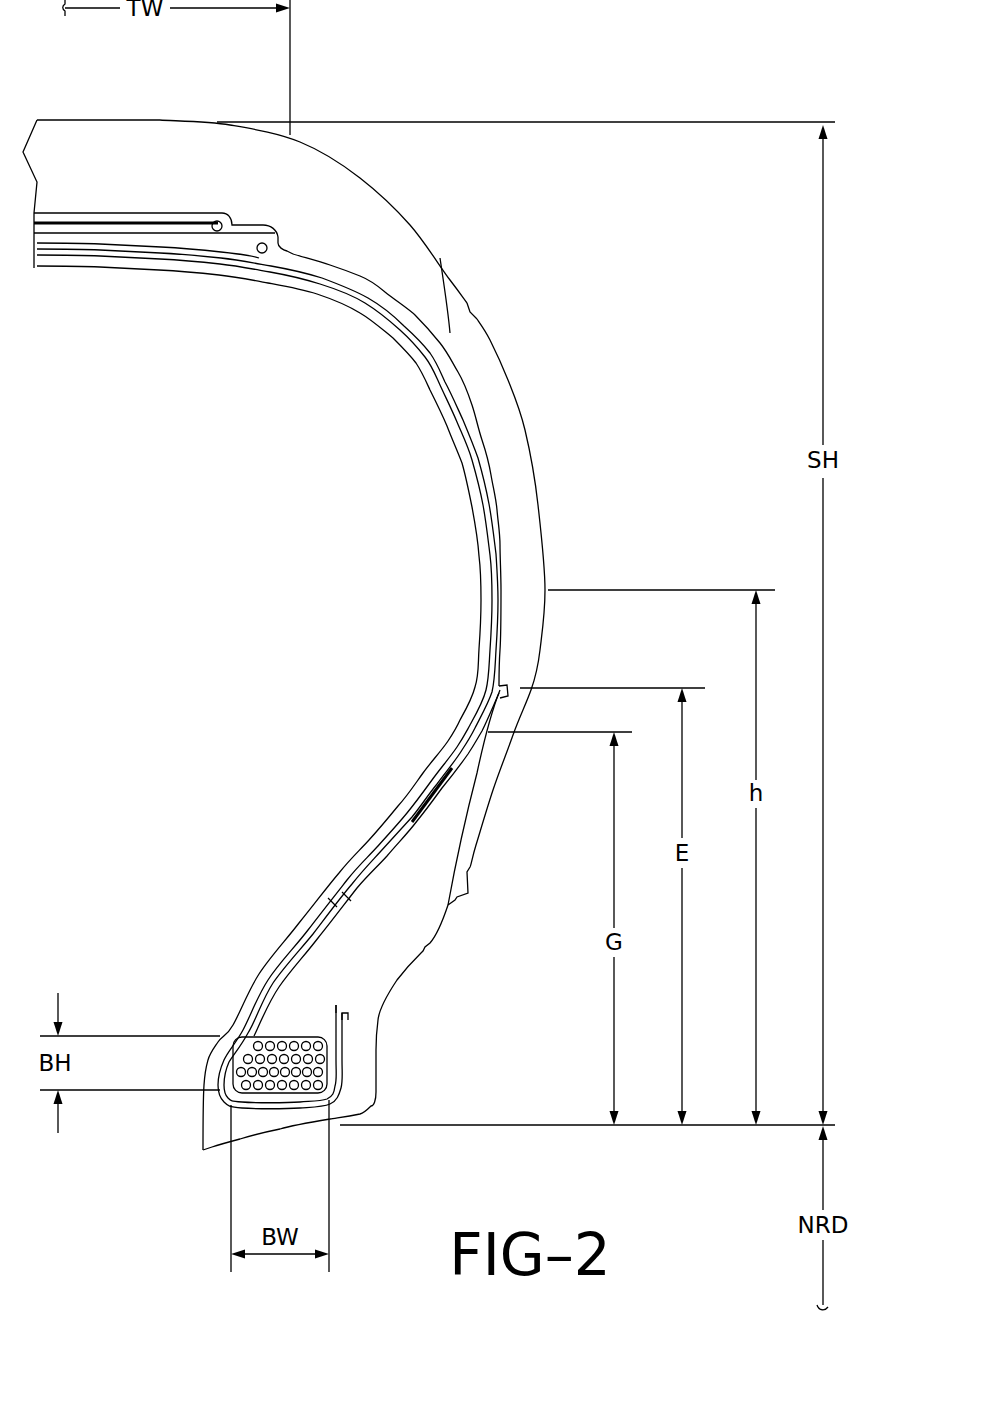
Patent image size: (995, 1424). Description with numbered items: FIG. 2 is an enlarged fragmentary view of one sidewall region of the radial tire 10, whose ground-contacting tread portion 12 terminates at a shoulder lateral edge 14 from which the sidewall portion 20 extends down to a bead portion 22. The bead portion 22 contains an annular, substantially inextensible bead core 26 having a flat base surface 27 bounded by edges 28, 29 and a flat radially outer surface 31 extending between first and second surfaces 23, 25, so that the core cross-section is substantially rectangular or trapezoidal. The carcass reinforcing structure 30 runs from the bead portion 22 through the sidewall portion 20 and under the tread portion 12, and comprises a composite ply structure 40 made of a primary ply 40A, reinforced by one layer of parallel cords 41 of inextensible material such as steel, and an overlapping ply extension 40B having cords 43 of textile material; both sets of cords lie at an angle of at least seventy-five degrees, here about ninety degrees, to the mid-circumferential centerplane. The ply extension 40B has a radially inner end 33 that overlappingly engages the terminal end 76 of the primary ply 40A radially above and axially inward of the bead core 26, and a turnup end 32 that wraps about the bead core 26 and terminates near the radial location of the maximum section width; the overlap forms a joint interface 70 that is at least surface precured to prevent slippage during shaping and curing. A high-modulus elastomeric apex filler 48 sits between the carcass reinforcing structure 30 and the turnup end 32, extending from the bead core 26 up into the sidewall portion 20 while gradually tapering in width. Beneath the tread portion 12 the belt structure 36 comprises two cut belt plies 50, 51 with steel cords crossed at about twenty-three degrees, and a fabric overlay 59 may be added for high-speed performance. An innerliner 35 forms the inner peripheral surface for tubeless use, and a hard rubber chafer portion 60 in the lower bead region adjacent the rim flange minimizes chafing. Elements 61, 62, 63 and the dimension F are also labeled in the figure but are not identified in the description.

The tire 10 is at (515, 260).
The tread portion 12 is at (57, 120).
The lateral edge 14 is at (296, 143).
The sidewall portion 20 is at (540, 507).
The bead portion 22 is at (299, 989).
The first surface 23 is at (228, 1085).
The second surface 25 is at (335, 1056).
The bead core 26 is at (263, 1047).
The flat base surface 27 is at (293, 1094).
The edge 28 is at (203, 1150).
The edge 29 is at (323, 1086).
The carcass reinforcing structure 30 is at (57, 281).
The flat radially outer surface 31 is at (288, 1035).
The turnup end 32 is at (458, 830).
The radially inner end 33 is at (347, 897).
The innerliner 35 is at (312, 932).
The tread reinforcing belt structure 36 is at (80, 211).
The composite ply structure 40 is at (495, 478).
The primary ply 40A is at (478, 433).
The ply extension 40B is at (313, 897).
The cords 41 is at (488, 514).
The cords 43 is at (333, 903).
The elastomeric apex filler 48 is at (353, 943).
The belt ply 50 is at (195, 240).
The belt ply 51 is at (197, 245).
The fabric overlay 59 is at (137, 214).
The hard rubber chafer portion 60 is at (410, 957).
The apex 61 is at (268, 1025).
The flipper 62 is at (290, 952).
The chipper end 63 is at (350, 1017).
The joint interface 70 is at (268, 1003).
The terminal end 76 is at (268, 1032).
The thickness dimension F is at (398, 213).